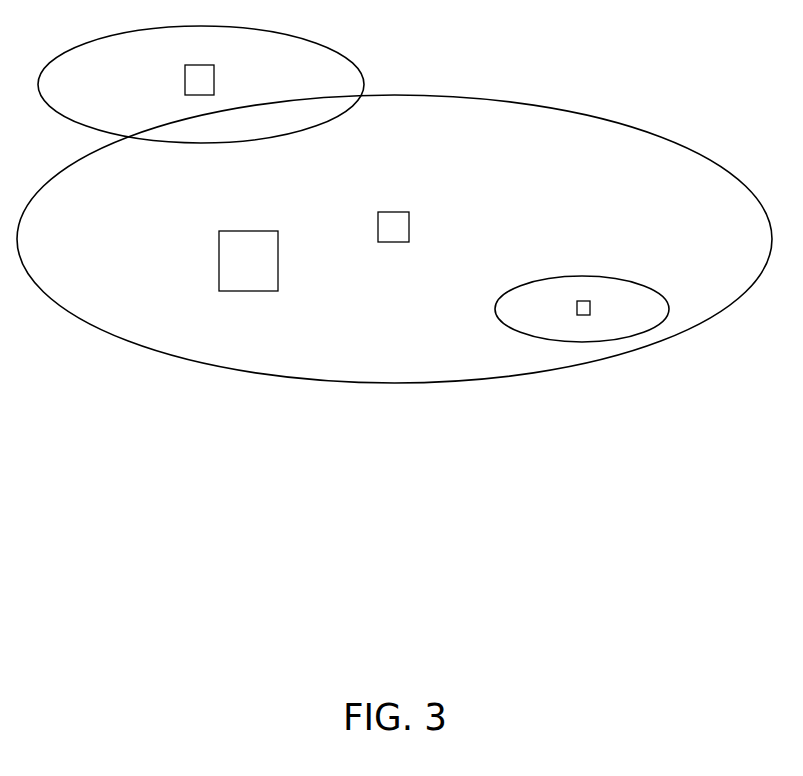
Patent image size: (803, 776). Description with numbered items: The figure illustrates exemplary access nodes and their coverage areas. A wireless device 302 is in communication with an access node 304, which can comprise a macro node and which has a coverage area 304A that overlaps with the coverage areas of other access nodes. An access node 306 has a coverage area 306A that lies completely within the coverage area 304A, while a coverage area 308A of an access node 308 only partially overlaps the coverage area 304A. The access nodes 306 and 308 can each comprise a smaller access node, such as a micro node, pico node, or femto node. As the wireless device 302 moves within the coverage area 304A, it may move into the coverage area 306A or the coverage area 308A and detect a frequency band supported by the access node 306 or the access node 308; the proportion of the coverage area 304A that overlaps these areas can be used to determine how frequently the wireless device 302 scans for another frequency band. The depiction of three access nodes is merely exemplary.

The wireless device 302 is at (248, 261).
The access node 304 is at (410, 213).
The coverage area 304A is at (450, 97).
The access node 306 is at (577, 305).
The coverage area 306A is at (610, 277).
The access node 308 is at (185, 68).
The coverage area 308A is at (260, 30).